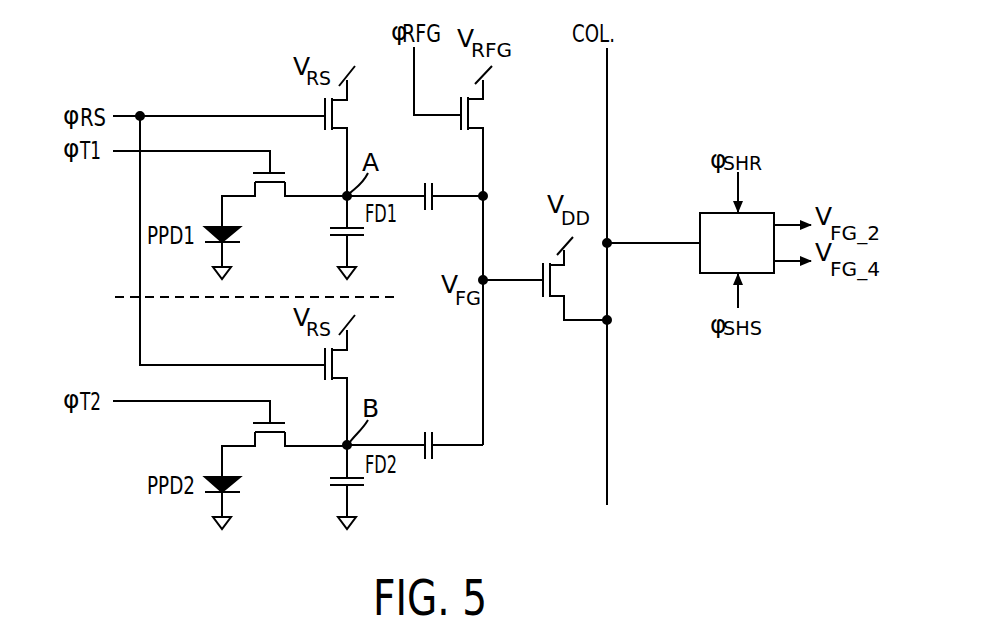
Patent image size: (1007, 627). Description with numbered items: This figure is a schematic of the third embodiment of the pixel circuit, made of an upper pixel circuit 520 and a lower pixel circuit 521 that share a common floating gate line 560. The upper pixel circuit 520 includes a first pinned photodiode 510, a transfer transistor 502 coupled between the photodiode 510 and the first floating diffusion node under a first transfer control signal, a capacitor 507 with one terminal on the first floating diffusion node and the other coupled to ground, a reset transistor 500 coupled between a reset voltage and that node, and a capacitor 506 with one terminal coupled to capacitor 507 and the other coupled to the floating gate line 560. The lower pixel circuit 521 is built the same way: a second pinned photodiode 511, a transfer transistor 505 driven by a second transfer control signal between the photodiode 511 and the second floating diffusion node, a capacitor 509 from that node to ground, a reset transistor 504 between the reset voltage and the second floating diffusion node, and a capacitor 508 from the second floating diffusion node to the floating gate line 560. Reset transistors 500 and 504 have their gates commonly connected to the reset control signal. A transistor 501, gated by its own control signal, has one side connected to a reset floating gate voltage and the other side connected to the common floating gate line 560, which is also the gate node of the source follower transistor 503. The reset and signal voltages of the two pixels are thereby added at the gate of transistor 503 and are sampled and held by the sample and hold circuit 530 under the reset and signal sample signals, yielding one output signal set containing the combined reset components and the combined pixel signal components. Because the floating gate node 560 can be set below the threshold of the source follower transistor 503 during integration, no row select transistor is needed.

The reset transistor 500 is at (325, 108).
The transistor 501 is at (460, 110).
The transfer transistor 502 is at (278, 175).
The source follower transistor 503 is at (543, 290).
The reset transistor 504 is at (325, 358).
The transfer transistor 505 is at (278, 425).
The capacitor 506 is at (426, 185).
The capacitor 507 is at (357, 237).
The capacitor 508 is at (436, 452).
The capacitor 509 is at (357, 487).
The pinned photodiode PPD1 510 is at (240, 231).
The pinned photodiode PPD2 511 is at (240, 481).
The upper pixel circuit 520 is at (120, 222).
The lower pixel circuit 521 is at (120, 433).
The sample and hold circuit 530 is at (700, 228).
The floating gate line 560 is at (485, 216).